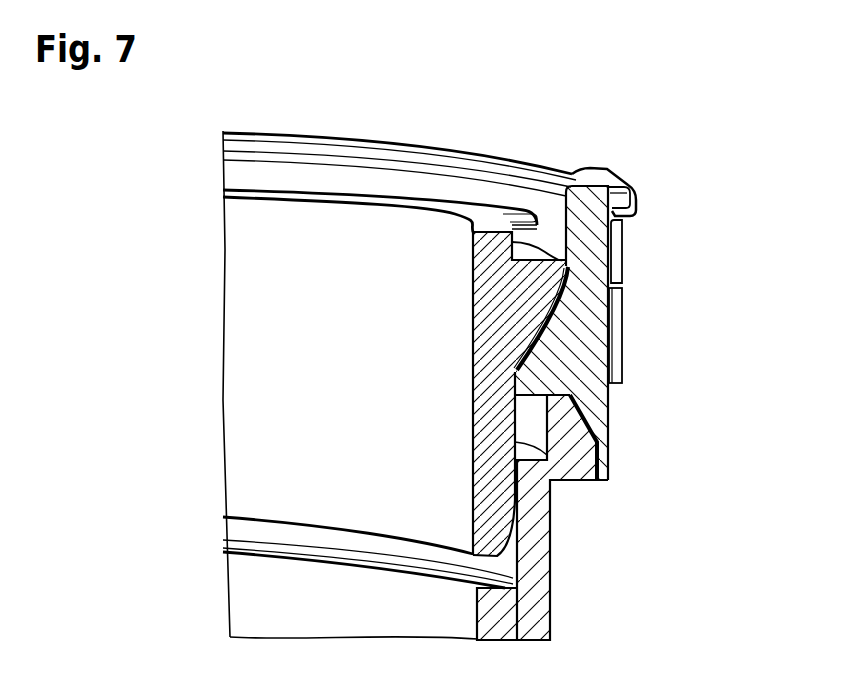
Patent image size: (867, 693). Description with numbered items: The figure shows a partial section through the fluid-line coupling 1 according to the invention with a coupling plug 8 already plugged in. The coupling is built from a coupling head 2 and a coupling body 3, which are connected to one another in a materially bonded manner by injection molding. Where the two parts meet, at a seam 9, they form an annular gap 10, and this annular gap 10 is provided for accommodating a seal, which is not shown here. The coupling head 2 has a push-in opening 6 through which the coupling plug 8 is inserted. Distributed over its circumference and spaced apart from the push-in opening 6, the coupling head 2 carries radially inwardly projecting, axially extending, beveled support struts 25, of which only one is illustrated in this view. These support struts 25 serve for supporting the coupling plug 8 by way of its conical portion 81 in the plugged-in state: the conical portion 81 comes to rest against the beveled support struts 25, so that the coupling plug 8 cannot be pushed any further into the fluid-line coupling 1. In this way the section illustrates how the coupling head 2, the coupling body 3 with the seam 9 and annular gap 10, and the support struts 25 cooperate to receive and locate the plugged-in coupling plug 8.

The fluid-line coupling 1 is at (724, 134).
The coupling head 2 is at (587, 203).
The coupling body 3 is at (540, 580).
The push-in opening 6 is at (344, 132).
The coupling plug 8 is at (258, 402).
The conical portion 81 is at (580, 285).
The support strut 25 is at (548, 332).
The seam 9 is at (598, 420).
The annular gap 10 is at (558, 447).